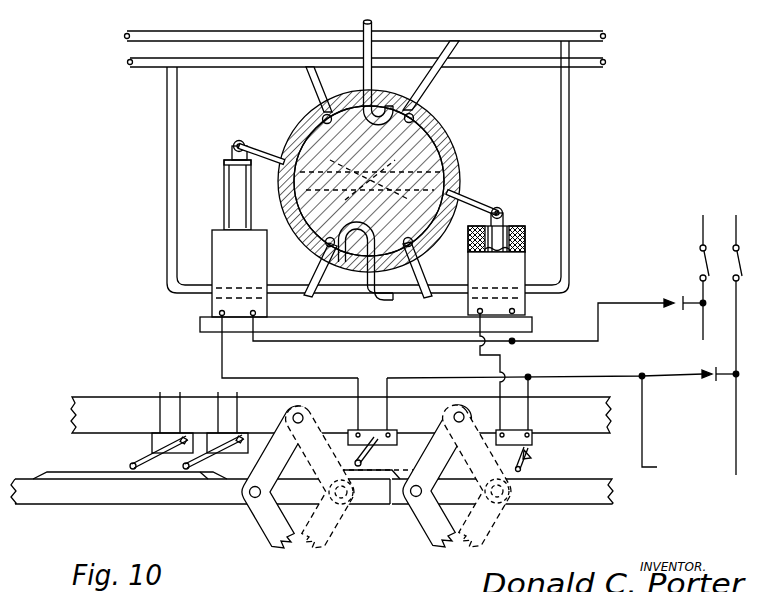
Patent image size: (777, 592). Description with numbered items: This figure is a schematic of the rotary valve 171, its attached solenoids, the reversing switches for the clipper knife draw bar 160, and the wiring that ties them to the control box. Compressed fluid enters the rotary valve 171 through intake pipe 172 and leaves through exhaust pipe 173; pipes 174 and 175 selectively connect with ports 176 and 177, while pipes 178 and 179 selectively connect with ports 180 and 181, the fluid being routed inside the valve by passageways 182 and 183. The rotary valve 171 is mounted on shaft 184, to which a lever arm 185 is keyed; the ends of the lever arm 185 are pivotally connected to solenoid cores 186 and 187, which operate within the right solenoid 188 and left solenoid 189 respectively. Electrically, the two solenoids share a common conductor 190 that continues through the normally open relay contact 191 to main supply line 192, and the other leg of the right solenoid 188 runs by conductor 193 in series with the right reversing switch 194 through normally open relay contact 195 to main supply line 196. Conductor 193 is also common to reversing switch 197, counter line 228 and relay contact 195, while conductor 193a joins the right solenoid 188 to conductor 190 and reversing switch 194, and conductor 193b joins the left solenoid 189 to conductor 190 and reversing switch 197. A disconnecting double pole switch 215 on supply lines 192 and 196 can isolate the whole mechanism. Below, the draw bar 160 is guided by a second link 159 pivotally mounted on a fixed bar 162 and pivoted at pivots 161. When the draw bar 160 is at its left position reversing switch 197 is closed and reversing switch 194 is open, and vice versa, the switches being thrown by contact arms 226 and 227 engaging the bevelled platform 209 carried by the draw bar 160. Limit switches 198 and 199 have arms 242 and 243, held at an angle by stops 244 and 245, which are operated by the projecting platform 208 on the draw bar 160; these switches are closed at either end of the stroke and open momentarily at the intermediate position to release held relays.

The second link 159 is at (283, 539).
The draw bar 160 is at (238, 499).
The pivot 161 is at (380, 491).
The fixed bar 162 is at (594, 424).
The rotary valve 171 is at (437, 152).
The intake pipe 172 is at (373, 24).
The exhaust pipe 173 is at (402, 288).
The pipe 174 is at (432, 78).
The pipe 175 is at (307, 79).
The port 176 is at (420, 120).
The port 177 is at (310, 120).
The pipe 178 is at (568, 131).
The pipe 179 is at (170, 156).
The port 180 is at (419, 246).
The port 181 is at (322, 241).
The passageway 182 is at (385, 102).
The passageway 183 is at (353, 268).
The shaft 184 is at (453, 166).
The lever arm 185 is at (470, 204).
The solenoid core 186 is at (501, 227).
The solenoid core 187 is at (233, 201).
The right solenoid 188 is at (516, 275).
The left solenoid 189 is at (216, 240).
The common conductor 190 is at (571, 341).
The relay normally open contact 191 is at (688, 309).
The main supply line 192 is at (706, 333).
The conductor 193 is at (571, 375).
The conductor 193a is at (534, 318).
The conductor 193b is at (220, 363).
The reversing switch 194 is at (543, 432).
The relay normally open contact 195 is at (721, 382).
The main supply line 196 is at (736, 446).
The reversing switch 197 is at (395, 432).
The limit switch 198 is at (156, 441).
The limit switch 199 is at (246, 428).
The projecting platform 208 is at (72, 481).
The projecting bevelled platform 209 is at (496, 503).
The disconnecting double pole switch 215 is at (700, 262).
The contact arm 226 is at (530, 457).
The contact arm 227 is at (368, 458).
The counter line 228 is at (659, 436).
The arm 242 is at (139, 462).
The arm 243 is at (205, 472).
The stop 244 is at (181, 453).
The stop 245 is at (246, 445).